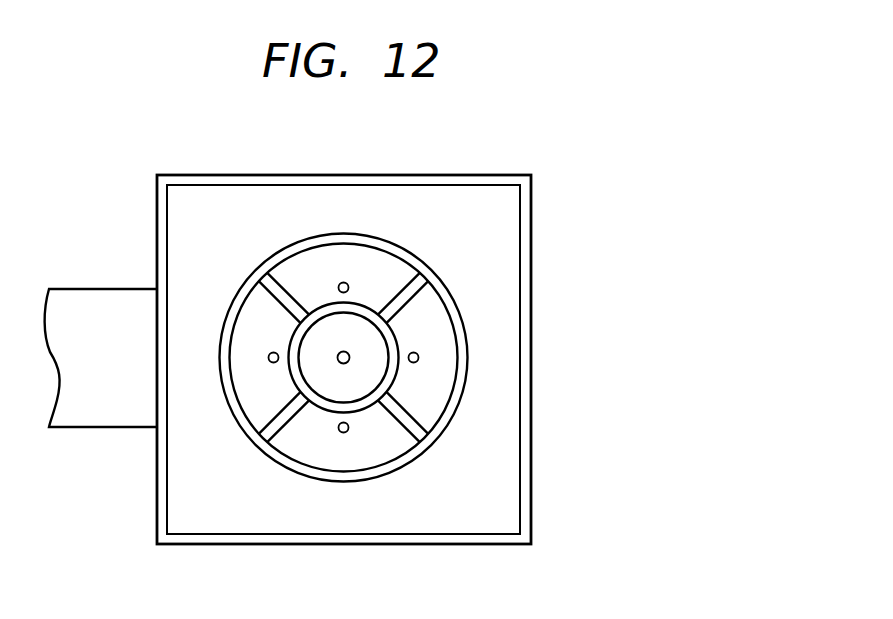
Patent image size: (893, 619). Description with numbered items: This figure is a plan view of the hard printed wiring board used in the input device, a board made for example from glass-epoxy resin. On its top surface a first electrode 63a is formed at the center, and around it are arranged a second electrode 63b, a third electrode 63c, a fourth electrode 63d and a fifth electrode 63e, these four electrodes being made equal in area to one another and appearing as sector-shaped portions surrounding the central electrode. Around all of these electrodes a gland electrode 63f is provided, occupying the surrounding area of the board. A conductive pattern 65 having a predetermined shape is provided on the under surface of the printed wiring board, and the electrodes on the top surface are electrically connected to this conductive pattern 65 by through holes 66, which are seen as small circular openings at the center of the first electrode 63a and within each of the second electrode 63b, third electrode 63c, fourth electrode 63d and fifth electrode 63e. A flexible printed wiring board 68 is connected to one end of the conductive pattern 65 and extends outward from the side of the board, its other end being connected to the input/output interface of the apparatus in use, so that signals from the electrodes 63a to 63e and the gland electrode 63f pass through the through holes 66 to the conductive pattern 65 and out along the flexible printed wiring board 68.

The conductive pattern 65 is at (531, 219).
The flexible printed wiring board 68 is at (103, 298).
The through holes 66 is at (348, 283).
The first electrode 63a is at (329, 390).
The second electrode 63b is at (328, 253).
The third electrode 63c is at (253, 397).
The fourth electrode 63d is at (383, 452).
The fifth electrode 63e is at (447, 352).
The gland electrode 63f is at (503, 440).